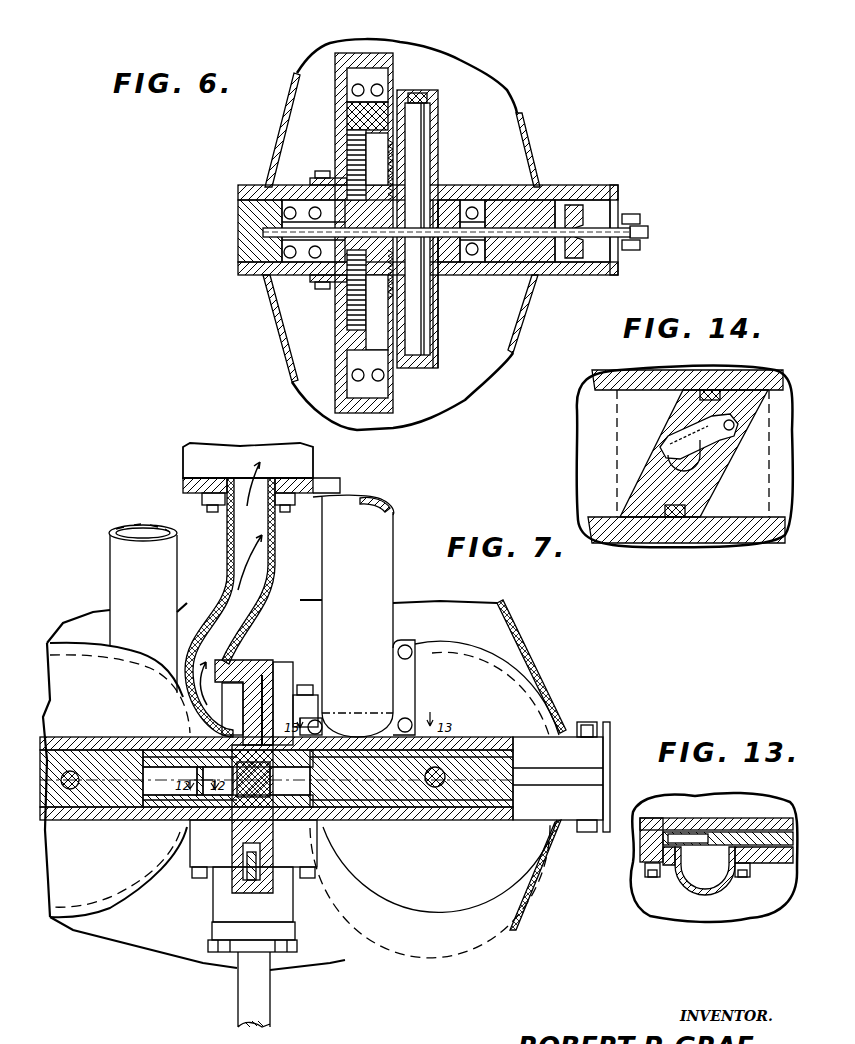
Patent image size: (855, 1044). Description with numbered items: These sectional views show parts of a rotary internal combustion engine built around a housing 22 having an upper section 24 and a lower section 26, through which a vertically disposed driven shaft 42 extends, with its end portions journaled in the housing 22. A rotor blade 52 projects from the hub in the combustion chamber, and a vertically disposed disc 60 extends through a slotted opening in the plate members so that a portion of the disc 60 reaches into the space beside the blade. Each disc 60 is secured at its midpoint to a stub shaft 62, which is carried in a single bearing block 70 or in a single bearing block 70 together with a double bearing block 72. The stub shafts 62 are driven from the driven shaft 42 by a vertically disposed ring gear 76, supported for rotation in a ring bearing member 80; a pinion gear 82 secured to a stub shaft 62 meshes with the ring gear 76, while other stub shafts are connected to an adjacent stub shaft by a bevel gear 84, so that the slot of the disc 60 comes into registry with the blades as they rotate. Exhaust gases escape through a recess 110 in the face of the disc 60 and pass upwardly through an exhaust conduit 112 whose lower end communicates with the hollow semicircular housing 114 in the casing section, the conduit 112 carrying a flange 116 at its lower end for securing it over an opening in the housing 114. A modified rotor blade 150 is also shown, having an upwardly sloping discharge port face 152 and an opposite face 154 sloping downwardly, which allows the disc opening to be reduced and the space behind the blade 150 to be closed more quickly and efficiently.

In FIG. 7, the housing 22 is at (538, 636).
In FIG. 7, the upper section 24 is at (536, 673).
In FIG. 7, the lower section 26 is at (548, 868).
In FIG. 7, the driven shaft 42 is at (266, 1002).
In FIG. 7, the rotor blade 52 is at (272, 778).
In FIG. 6, the disc 60 is at (427, 135).
In FIG. 13, the disc 60 is at (698, 830).
In FIG. 7, the disc 60 is at (303, 697).
In FIG. 6, the stub shaft 62 is at (462, 200).
In FIG. 6, the single bearing block 70 is at (484, 200).
In FIG. 6, the double bearing block 72 is at (301, 200).
In FIG. 6, the ring gear 76 is at (347, 146).
In FIG. 6, the ring bearing member 80 is at (387, 56).
In FIG. 6, the pinion gear 82 is at (308, 273).
In FIG. 6, the bevel gear 84 is at (580, 207).
In FIG. 13, the recess 110 is at (730, 845).
In FIG. 7, the recess 110 is at (264, 700).
In FIG. 13, the exhaust conduit 112 is at (722, 892).
In FIG. 7, the exhaust conduit 112 is at (232, 562).
In FIG. 6, the hollow semicircular housing 114 is at (437, 318).
In FIG. 7, the hollow semicircular housing 114 is at (300, 637).
In FIG. 13, the flange 116 is at (746, 868).
In FIG. 7, the flange 116 is at (415, 686).
In FIG. 14, the rotor blade 150 is at (710, 490).
In FIG. 14, the discharge port face 152 is at (683, 410).
In FIG. 14, the opposite face 154 is at (736, 428).